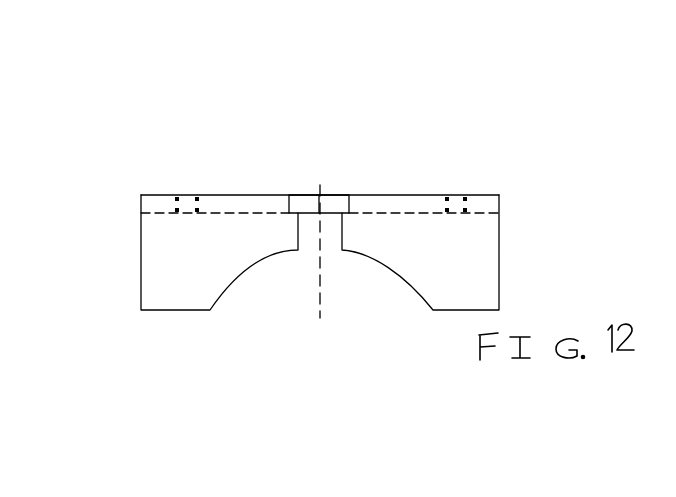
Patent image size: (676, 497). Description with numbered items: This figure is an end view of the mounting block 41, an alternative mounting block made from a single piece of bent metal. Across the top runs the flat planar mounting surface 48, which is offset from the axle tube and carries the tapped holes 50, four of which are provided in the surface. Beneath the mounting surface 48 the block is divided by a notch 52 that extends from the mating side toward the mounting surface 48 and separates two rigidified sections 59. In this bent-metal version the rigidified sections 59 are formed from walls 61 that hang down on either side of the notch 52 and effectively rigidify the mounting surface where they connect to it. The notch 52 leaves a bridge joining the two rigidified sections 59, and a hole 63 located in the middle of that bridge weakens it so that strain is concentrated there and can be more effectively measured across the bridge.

The mounting block 41 is at (137, 163).
The mounting surface 48 is at (377, 195).
The tapped holes 50 is at (187, 193).
The notch 52 is at (332, 242).
The rigidified sections 59 is at (218, 193).
The walls 61 is at (148, 263).
The hole 63 is at (303, 193).